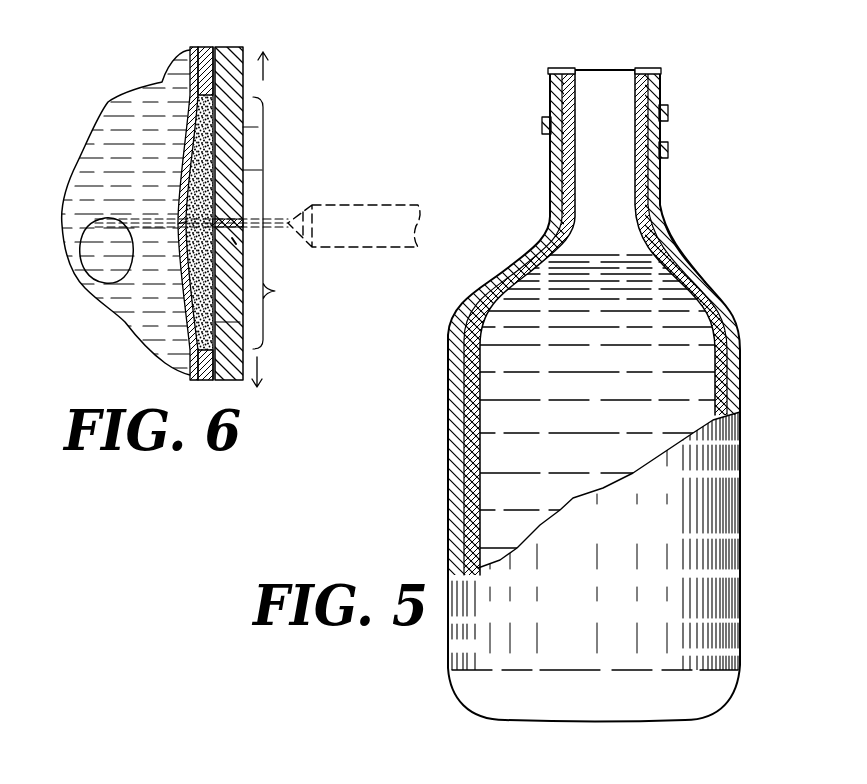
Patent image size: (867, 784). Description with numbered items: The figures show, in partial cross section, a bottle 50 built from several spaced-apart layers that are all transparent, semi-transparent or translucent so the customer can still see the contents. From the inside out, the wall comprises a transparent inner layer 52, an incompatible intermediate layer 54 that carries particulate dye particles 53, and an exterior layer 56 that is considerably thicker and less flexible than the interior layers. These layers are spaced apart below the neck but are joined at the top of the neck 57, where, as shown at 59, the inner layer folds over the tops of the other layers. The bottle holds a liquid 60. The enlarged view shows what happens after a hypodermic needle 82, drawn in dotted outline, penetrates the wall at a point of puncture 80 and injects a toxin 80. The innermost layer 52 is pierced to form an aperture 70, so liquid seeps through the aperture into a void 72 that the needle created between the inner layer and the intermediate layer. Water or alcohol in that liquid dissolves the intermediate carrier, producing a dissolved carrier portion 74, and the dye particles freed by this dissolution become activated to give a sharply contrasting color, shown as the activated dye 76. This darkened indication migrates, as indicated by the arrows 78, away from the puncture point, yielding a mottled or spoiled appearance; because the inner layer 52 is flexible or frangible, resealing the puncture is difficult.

In FIG. 5, the bottle 50 is at (751, 449).
In FIG. 5, the inner layer 52 is at (578, 68).
In FIG. 6, the inner layer 52 is at (159, 84).
In FIG. 5, the dye particles 53 is at (658, 167).
In FIG. 5, the intermediate layer 54 is at (578, 102).
In FIG. 6, the intermediate layer 54 is at (204, 47).
In FIG. 5, the exterior layer 56 is at (550, 87).
In FIG. 5, the neck 57 is at (660, 92).
In FIG. 5, the folded-over inner layer portion 59 is at (563, 62).
In FIG. 5, the liquid 60 is at (618, 396).
In FIG. 6, the liquid 60 is at (173, 311).
In FIG. 6, the aperture 70 is at (178, 224).
In FIG. 6, the void 72 is at (262, 170).
In FIG. 6, the dissolved carrier portion 74 is at (270, 222).
In FIG. 6, the activated dye 76 is at (240, 322).
In FIG. 6, the arrows 78 is at (270, 369).
In FIG. 6, the point of puncture 80 is at (95, 267).
In FIG. 6, the hypodermic needle 82 is at (355, 205).